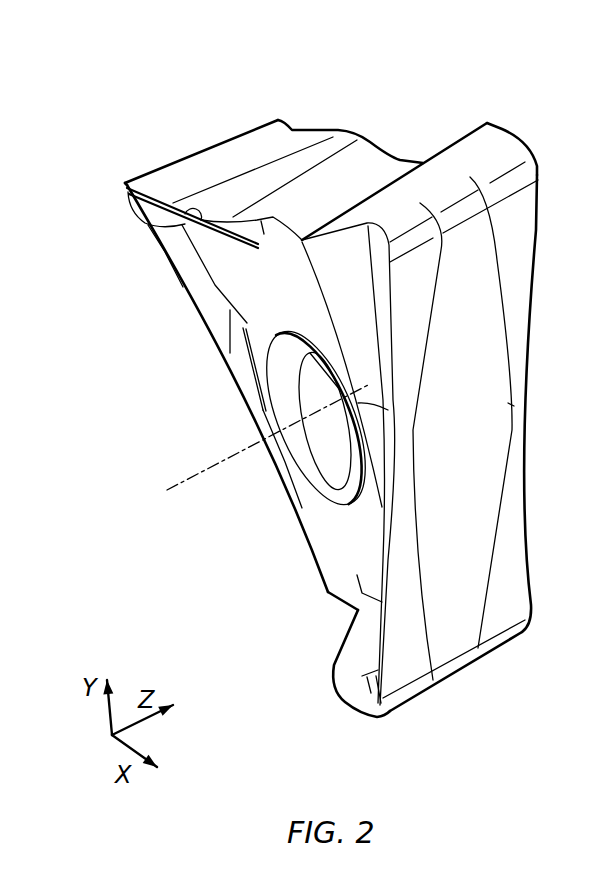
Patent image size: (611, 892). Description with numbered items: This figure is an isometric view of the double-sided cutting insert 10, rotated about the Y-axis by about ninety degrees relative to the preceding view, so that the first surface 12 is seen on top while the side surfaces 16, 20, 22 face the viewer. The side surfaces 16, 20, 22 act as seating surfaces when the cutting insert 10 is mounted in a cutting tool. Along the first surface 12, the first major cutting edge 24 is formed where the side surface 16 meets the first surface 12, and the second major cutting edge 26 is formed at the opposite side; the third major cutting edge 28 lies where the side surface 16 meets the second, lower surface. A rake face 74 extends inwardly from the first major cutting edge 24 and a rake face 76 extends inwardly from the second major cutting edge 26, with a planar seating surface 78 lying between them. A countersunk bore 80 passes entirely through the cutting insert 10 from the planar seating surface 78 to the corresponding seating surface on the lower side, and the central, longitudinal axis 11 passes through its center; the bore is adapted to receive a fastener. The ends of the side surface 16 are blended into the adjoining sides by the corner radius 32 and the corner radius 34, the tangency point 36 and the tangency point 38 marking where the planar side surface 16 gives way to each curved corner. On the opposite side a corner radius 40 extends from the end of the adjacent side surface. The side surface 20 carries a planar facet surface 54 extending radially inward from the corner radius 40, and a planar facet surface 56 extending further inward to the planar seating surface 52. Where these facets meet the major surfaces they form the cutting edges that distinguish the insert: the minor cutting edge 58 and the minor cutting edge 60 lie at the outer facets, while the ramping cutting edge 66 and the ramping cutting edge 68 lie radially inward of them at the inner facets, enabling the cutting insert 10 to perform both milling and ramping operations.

The cutting insert 10 is at (138, 568).
The central, longitudinal axis 11 is at (180, 480).
The first surface 12 is at (322, 542).
The side surface 16 is at (482, 337).
The side surface 20 is at (377, 163).
The side surface 22 is at (296, 653).
The first major cutting edge 24 is at (393, 374).
The second major cutting edge 26 is at (228, 363).
The third major cutting edge 28 is at (537, 262).
The corner radius 32 is at (520, 171).
The corner radius 34 is at (518, 641).
The tangency point 36 is at (516, 197).
The tangency point 38 is at (453, 667).
The corner radius 40 is at (119, 177).
The planar seating surface 52 is at (357, 177).
The planar facet surface 54 is at (210, 166).
The planar facet surface 56 is at (290, 167).
The minor cutting edge 58 is at (505, 128).
The minor cutting edge 60 is at (141, 221).
The ramping cutting edge 66 is at (283, 228).
The ramping cutting edge 68 is at (167, 250).
The rake face 74 is at (385, 315).
The rake face 76 is at (216, 310).
The planar seating surface 78 is at (333, 562).
The countersunk bore 80 is at (322, 467).